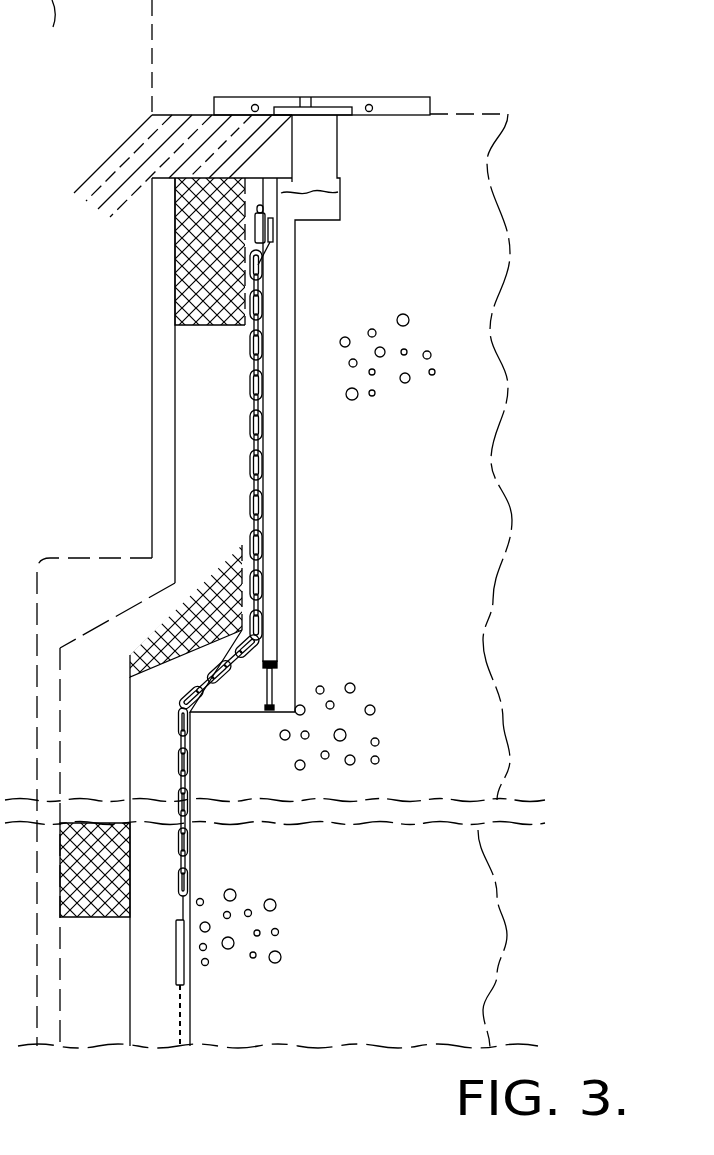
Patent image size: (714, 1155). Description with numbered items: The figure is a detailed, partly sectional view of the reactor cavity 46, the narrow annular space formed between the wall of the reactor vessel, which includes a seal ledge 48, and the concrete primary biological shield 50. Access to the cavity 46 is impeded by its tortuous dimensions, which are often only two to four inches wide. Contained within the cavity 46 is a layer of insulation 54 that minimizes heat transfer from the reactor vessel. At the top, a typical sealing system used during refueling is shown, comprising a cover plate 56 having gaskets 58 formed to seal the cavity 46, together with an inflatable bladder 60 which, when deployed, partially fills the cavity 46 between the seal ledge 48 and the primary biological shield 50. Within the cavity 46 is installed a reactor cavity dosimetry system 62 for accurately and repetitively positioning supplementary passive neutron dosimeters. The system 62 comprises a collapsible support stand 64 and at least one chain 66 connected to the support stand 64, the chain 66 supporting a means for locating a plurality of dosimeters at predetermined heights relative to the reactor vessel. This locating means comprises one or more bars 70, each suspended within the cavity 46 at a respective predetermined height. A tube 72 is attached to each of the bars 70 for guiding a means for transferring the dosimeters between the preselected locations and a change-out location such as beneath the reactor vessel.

The reactor cavity 46 is at (280, 419).
The seal ledge 48 is at (163, 128).
The concrete primary biological shield 50 is at (485, 272).
The layer of insulation 54 is at (178, 297).
The cover plate 56 is at (410, 110).
The gaskets 58 is at (255, 104).
The inflatable bladder 60 is at (325, 127).
The reactor cavity dosimetry system 62 is at (288, 537).
The collapsible support stand 64 is at (278, 462).
The chain 66 is at (185, 872).
The bar 70 is at (177, 912).
The tube 72 is at (175, 960).